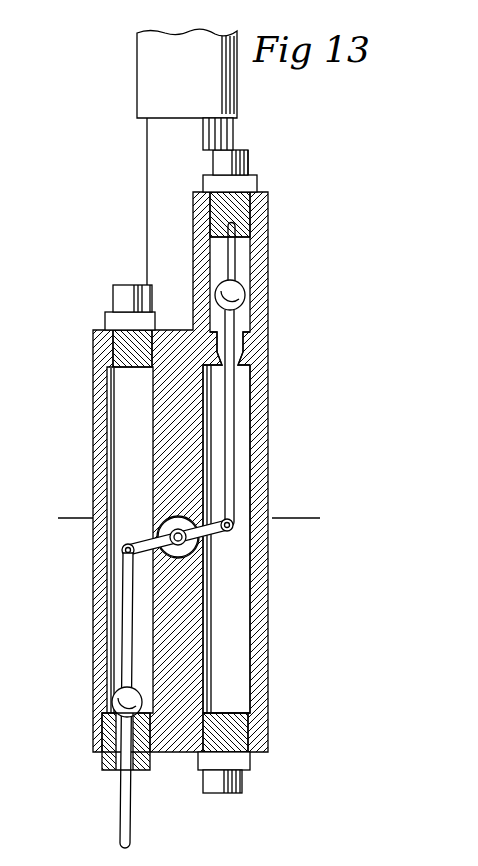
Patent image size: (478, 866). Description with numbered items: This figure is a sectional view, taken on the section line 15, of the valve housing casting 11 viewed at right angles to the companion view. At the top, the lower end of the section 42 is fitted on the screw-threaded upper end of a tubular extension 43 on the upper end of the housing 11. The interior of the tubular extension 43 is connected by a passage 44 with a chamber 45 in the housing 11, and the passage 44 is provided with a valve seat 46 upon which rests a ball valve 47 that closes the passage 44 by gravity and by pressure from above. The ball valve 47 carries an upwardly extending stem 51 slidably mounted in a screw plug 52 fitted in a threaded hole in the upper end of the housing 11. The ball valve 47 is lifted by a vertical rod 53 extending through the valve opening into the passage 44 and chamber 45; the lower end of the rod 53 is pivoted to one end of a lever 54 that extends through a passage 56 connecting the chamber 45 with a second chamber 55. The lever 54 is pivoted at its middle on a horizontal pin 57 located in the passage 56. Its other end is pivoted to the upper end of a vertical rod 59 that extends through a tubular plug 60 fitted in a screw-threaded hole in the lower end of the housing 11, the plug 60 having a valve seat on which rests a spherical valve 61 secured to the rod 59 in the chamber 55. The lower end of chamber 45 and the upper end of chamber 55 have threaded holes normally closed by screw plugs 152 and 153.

The valve housing casting 11 is at (262, 427).
The removable plug 15 is at (189, 518).
The section 42 is at (150, 95).
The tubular extension 43 is at (158, 143).
The passage 44 is at (247, 310).
The chamber 45 is at (240, 605).
The valve seat 46 is at (245, 328).
The ball valve 47 is at (241, 290).
The stem 51 is at (233, 250).
The screw plug 52 is at (257, 179).
The vertical rod 53 is at (224, 390).
The lever 54 is at (213, 537).
The chamber 55 is at (113, 617).
The passage 56 is at (158, 516).
The horizontal pin 57 is at (170, 536).
The vertical rod 59 is at (126, 578).
The tubular plug 60 is at (104, 760).
The spherical valve 61 is at (120, 700).
The screw plug 152 is at (250, 770).
The screw plug 153 is at (122, 300).